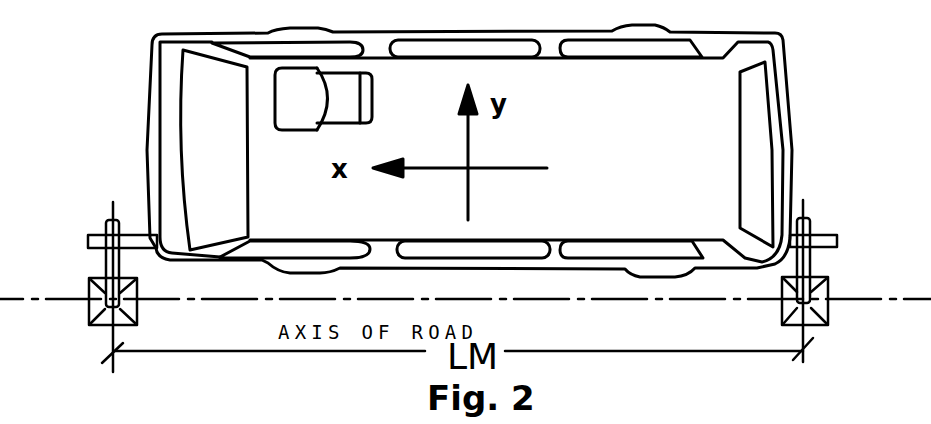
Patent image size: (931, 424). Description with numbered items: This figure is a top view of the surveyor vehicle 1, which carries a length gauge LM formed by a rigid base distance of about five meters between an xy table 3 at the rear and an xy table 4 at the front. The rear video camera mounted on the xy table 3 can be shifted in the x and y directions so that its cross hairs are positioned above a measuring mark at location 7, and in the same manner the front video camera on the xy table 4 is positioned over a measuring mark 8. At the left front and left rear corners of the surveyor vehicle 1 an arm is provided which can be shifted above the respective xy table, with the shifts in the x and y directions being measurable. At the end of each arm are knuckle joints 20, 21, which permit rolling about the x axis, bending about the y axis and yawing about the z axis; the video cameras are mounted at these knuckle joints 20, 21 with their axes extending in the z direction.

The surveyor vehicle 1 is at (630, 115).
The xy table 3 is at (832, 290).
The xy table 4 is at (92, 287).
The measuring mark location 7 is at (817, 323).
The measuring mark 8 is at (90, 323).
The knuckle joint 20 is at (812, 234).
The knuckle joint 21 is at (107, 235).